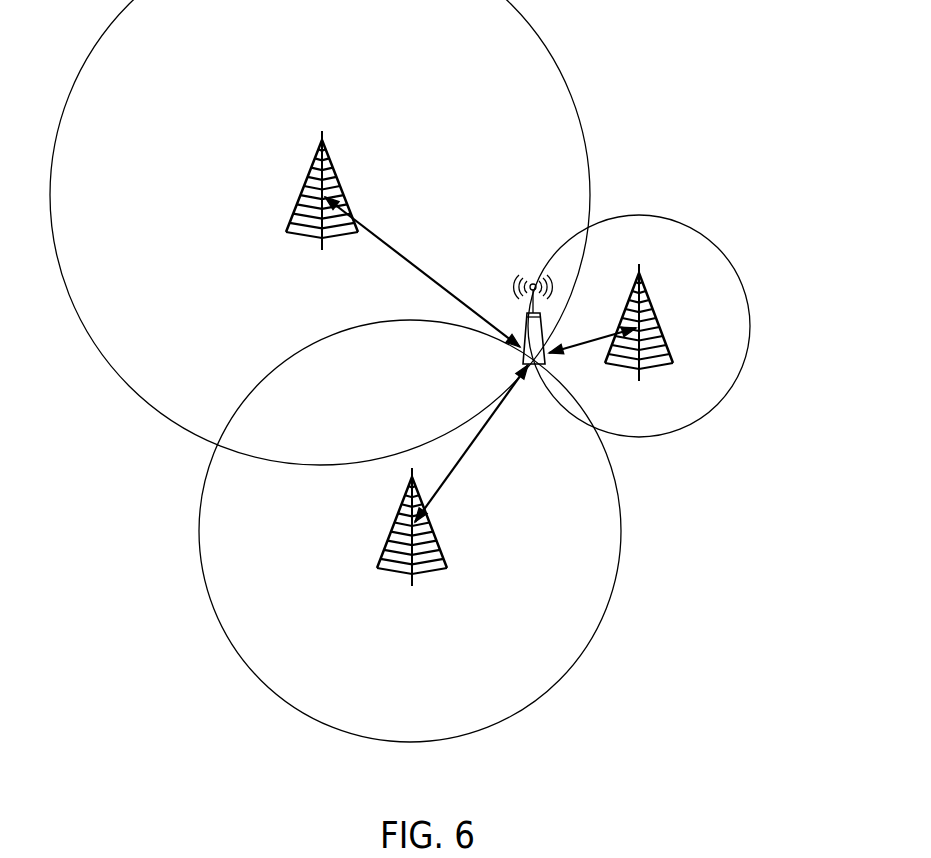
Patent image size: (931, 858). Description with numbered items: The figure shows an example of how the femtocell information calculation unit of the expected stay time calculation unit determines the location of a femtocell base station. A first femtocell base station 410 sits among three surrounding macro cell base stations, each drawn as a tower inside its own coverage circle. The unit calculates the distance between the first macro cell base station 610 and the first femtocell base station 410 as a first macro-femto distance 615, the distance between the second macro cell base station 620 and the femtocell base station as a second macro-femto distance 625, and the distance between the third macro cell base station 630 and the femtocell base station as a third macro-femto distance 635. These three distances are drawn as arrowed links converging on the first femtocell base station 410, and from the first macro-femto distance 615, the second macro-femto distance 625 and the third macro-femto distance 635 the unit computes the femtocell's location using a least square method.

The first femtocell base station 410 is at (538, 286).
The first macro cell base station 610 is at (302, 191).
The first macro-femto distance 615 is at (397, 252).
The second macro cell base station 620 is at (663, 322).
The second macro-femto distance 625 is at (587, 346).
The third macro cell base station 630 is at (394, 527).
The third macro-femto distance 635 is at (447, 479).